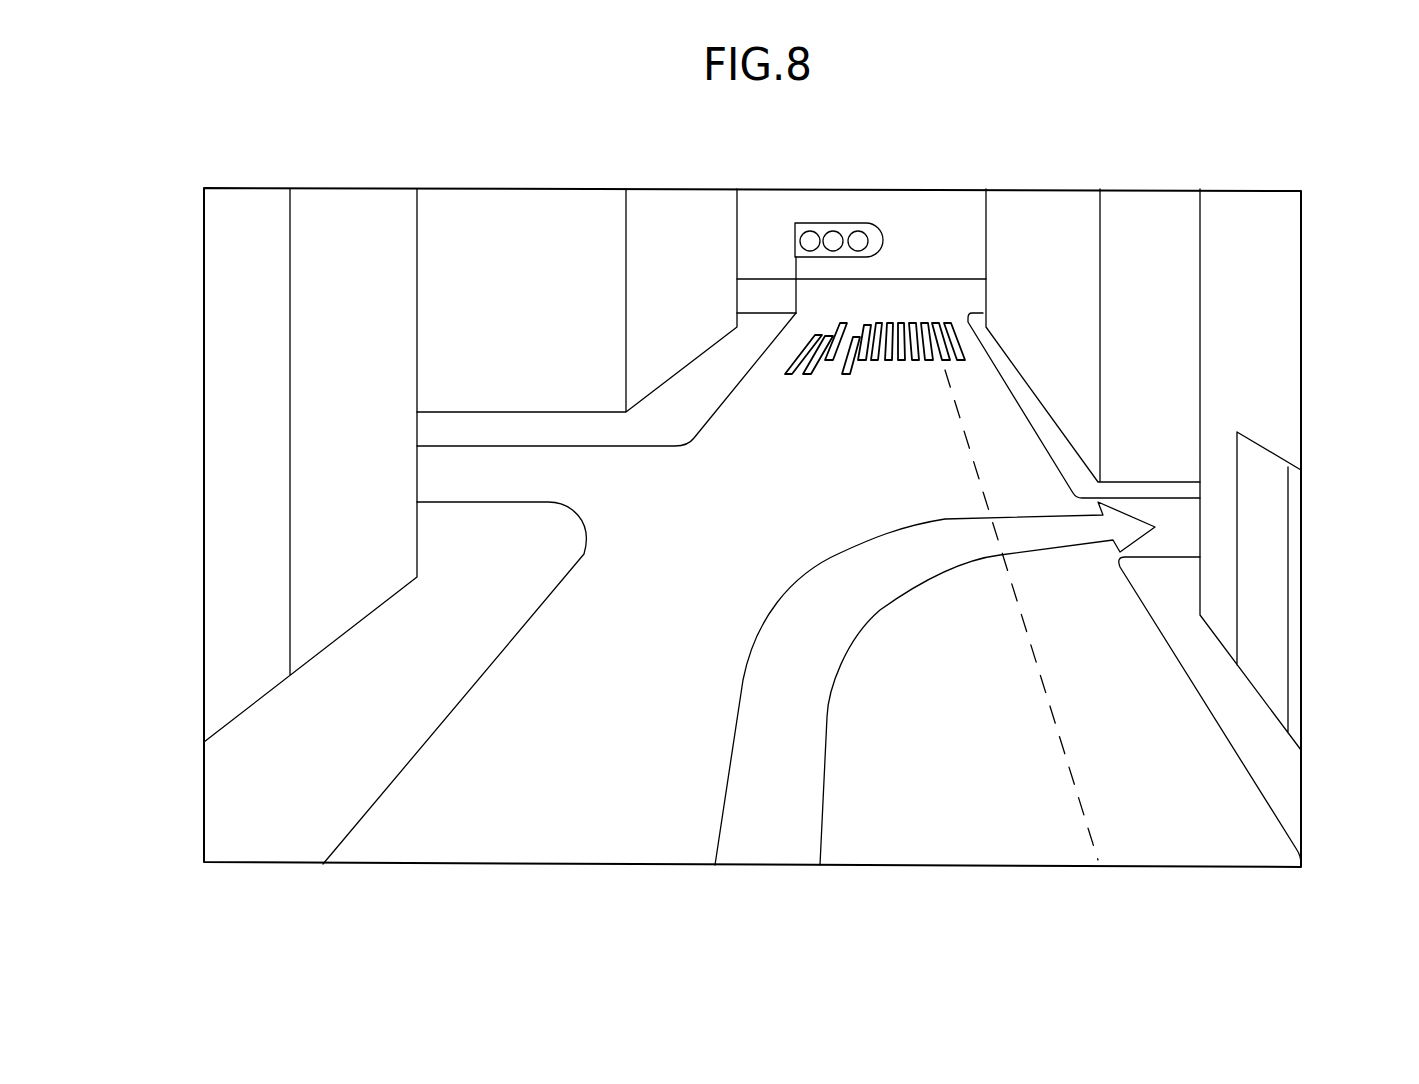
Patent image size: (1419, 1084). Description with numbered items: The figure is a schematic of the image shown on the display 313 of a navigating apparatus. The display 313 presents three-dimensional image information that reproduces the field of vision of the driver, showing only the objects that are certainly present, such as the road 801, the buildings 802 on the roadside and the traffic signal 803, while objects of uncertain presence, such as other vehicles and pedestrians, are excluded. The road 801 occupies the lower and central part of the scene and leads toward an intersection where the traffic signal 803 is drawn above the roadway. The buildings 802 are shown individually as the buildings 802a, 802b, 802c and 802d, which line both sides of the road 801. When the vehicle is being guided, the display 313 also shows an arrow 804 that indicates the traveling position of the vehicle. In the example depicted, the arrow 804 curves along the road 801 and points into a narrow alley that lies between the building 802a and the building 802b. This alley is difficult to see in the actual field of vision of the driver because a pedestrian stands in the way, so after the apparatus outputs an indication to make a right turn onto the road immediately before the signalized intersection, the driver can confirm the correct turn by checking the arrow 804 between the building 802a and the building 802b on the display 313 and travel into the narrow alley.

The display 313 is at (1210, 160).
The road 801 is at (566, 802).
The buildings 802 is at (752, 490).
The building 802a is at (1265, 338).
The building 802b is at (1027, 225).
The building 802c is at (559, 225).
The building 802d is at (242, 495).
The traffic signal 803 is at (840, 223).
The arrow 804 is at (863, 633).